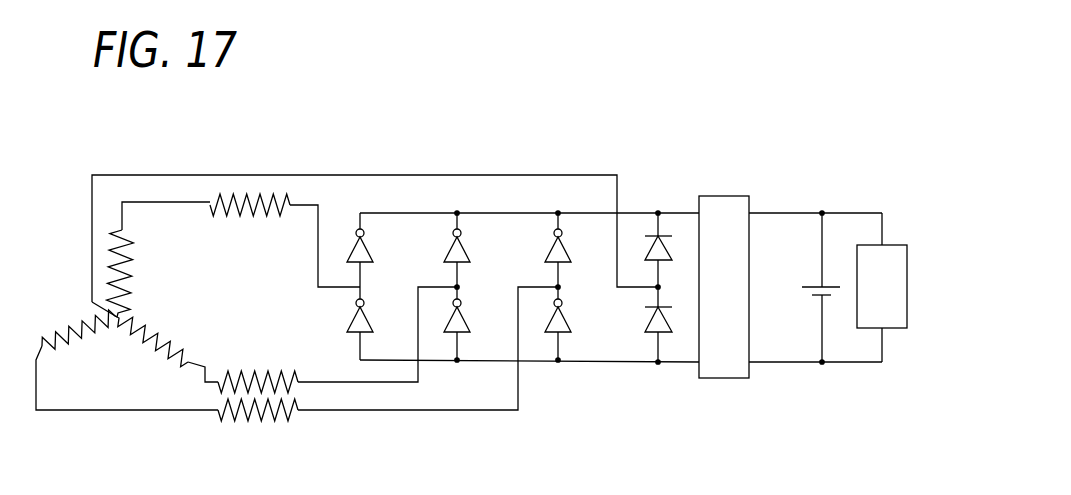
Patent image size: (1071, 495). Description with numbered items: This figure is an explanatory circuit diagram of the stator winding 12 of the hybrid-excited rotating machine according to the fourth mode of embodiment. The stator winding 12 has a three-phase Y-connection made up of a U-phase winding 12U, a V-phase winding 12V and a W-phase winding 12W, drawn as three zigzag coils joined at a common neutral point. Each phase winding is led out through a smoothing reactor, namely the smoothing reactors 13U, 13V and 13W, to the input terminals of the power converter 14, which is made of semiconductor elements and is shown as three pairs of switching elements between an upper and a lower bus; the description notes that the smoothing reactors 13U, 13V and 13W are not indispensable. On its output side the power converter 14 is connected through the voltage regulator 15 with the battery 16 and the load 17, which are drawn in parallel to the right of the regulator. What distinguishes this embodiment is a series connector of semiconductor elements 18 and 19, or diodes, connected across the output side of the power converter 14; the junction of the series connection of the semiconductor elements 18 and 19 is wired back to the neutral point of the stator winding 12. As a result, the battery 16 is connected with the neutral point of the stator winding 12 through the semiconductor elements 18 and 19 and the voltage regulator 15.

The stator winding 12 is at (72, 285).
The U-phase winding 12U is at (132, 258).
The V-phase winding 12V is at (173, 337).
The W-phase winding 12W is at (90, 347).
The smoothing reactor 13U is at (265, 175).
The smoothing reactor 13V is at (273, 380).
The smoothing reactor 13W is at (257, 415).
The power converter 14 is at (430, 235).
The voltage regulator 15 is at (723, 195).
The battery 16 is at (805, 275).
The load 17 is at (898, 245).
The semiconductor element 18 is at (668, 237).
The semiconductor element 19 is at (668, 333).